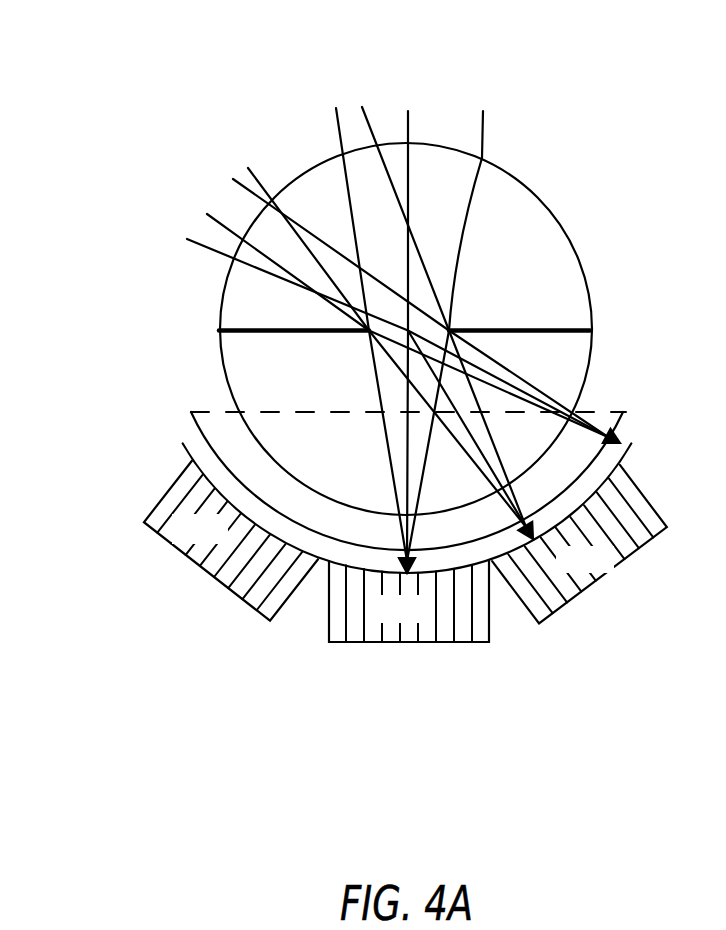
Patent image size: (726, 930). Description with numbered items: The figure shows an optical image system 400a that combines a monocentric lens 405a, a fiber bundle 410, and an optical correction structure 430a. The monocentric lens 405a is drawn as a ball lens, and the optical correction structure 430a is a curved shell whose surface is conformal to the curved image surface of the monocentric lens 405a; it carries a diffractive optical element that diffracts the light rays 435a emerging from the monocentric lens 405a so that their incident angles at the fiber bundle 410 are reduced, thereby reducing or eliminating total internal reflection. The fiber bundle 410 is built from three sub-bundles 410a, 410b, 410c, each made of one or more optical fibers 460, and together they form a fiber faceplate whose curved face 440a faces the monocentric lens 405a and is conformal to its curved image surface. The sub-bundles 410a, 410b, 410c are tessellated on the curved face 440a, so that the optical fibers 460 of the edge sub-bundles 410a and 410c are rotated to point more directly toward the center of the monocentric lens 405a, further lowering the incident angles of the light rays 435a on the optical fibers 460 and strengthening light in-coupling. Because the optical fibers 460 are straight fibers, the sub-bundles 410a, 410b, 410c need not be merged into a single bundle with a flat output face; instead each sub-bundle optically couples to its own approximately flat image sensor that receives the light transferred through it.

The optical image system 400a is at (205, 98).
The monocentric lens 405a is at (545, 201).
The optical correction structure 430a is at (544, 322).
The light rays 435a is at (478, 116).
The curved face 440a is at (377, 492).
The optical fibers 460 is at (160, 478).
The fiber bundle 410 is at (209, 580).
The sub-bundle 410a is at (603, 562).
The sub-bundle 410b is at (416, 612).
The sub-bundle 410c is at (217, 533).